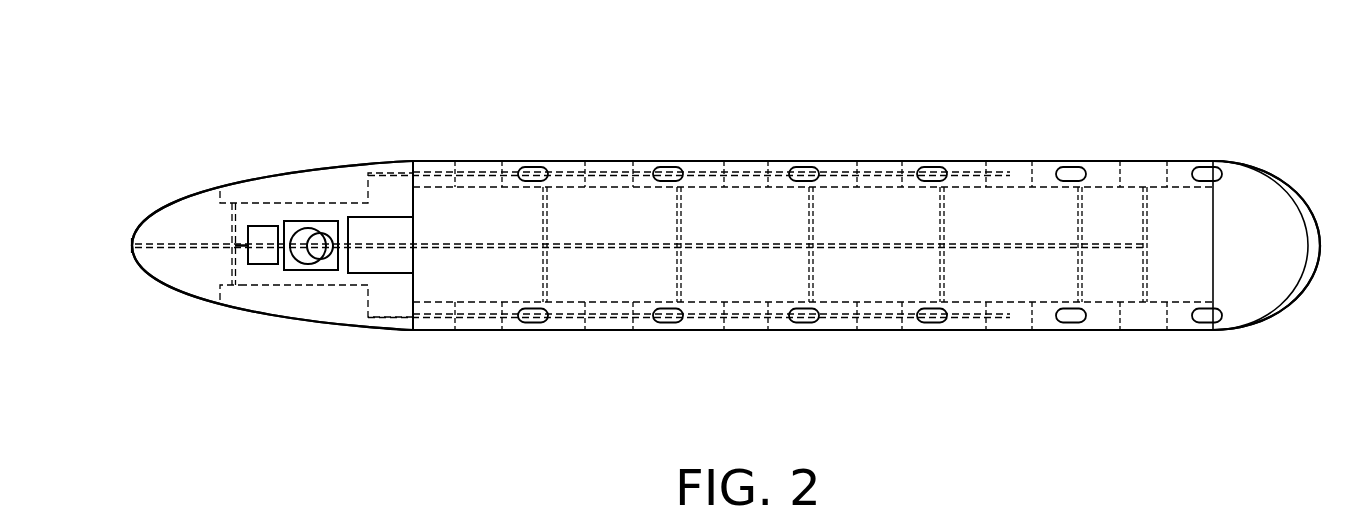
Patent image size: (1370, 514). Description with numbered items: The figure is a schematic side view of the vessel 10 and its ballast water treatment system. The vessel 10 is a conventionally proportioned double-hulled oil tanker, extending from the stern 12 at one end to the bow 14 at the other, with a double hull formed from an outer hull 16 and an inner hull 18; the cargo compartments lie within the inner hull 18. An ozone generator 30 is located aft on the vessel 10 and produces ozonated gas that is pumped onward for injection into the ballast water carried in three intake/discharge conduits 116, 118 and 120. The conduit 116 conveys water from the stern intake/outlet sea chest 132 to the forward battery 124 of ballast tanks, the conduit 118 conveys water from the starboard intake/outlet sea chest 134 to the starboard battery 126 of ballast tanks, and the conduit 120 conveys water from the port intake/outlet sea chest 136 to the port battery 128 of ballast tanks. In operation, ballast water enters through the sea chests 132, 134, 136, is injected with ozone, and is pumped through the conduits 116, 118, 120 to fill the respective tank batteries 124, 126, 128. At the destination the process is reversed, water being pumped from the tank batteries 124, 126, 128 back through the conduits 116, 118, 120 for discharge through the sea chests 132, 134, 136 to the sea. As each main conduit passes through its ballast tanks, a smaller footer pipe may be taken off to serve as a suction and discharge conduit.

The vessel 10 is at (1198, 116).
The stern 12 is at (138, 267).
The bow 14 is at (1320, 247).
The outer hull 16 is at (577, 160).
The inner hull 18 is at (600, 188).
The ozone generator 30 is at (262, 226).
The ballast water intake/discharge conduit 116 is at (165, 243).
The ballast water intake/discharge conduit 118 is at (277, 285).
The ballast water intake/discharge conduit 120 is at (292, 203).
The forward battery of ballast tanks 124 is at (880, 160).
The starboard battery of ballast tanks 126 is at (480, 332).
The port battery of ballast tanks 128 is at (480, 160).
The stern intake/outlet sea chest 132 is at (130, 245).
The starboard intake/outlet sea chest 134 is at (218, 300).
The port intake/outlet sea chest 136 is at (222, 200).